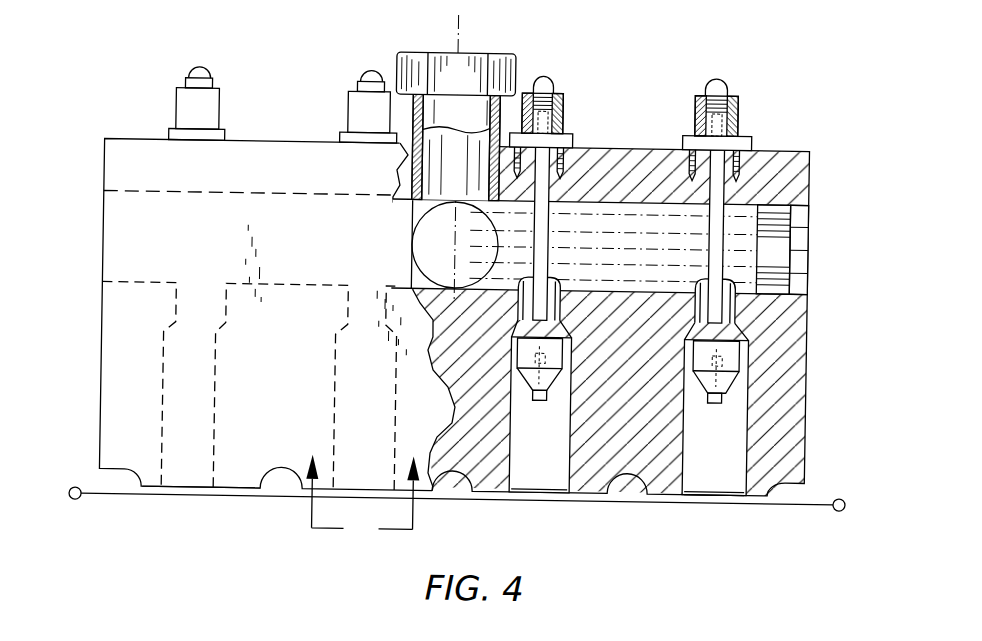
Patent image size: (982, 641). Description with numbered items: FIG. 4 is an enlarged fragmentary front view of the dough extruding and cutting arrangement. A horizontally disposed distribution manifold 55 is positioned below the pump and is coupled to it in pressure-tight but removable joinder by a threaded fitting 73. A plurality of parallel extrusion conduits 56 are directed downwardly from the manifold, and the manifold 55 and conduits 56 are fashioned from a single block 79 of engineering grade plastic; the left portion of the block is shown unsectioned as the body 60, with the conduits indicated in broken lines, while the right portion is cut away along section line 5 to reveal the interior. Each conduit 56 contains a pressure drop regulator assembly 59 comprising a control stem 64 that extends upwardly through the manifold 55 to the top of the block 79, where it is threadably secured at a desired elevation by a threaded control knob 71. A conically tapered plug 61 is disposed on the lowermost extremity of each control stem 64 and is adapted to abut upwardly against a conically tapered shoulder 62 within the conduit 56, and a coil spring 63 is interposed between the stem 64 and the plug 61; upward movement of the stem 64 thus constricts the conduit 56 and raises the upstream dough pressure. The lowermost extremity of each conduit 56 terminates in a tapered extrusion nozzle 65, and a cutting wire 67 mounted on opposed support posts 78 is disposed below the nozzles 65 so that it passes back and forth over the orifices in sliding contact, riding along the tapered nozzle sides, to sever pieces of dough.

The section line 5- 5 is at (363, 480).
The distribution manifold 55 is at (641, 253).
The extrusion conduits 56 is at (335, 392).
The pressure drop regulator assembly 59 is at (571, 385).
The manifold block 60 is at (313, 143).
The conically tapered plug 61 is at (560, 373).
The conically tapered shoulder 62 is at (694, 333).
The coil spring 63 is at (694, 386).
The control stem 64 is at (548, 250).
The tapered extrusion nozzle 65 is at (158, 490).
The cutting wire 67 is at (669, 499).
The threaded control knob 71 is at (563, 108).
The threaded fitting 73 is at (514, 66).
The support posts 78 is at (81, 506).
The block 79 is at (809, 407).